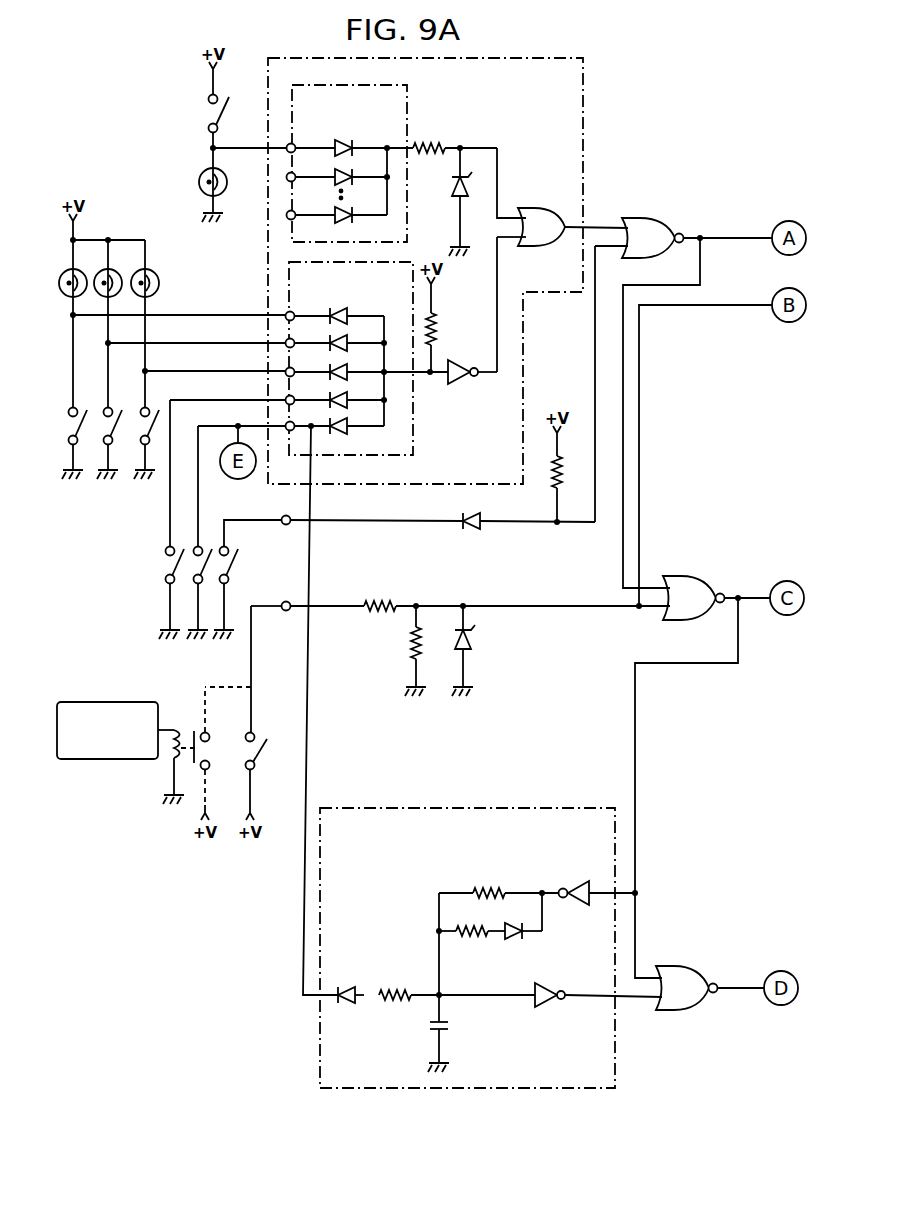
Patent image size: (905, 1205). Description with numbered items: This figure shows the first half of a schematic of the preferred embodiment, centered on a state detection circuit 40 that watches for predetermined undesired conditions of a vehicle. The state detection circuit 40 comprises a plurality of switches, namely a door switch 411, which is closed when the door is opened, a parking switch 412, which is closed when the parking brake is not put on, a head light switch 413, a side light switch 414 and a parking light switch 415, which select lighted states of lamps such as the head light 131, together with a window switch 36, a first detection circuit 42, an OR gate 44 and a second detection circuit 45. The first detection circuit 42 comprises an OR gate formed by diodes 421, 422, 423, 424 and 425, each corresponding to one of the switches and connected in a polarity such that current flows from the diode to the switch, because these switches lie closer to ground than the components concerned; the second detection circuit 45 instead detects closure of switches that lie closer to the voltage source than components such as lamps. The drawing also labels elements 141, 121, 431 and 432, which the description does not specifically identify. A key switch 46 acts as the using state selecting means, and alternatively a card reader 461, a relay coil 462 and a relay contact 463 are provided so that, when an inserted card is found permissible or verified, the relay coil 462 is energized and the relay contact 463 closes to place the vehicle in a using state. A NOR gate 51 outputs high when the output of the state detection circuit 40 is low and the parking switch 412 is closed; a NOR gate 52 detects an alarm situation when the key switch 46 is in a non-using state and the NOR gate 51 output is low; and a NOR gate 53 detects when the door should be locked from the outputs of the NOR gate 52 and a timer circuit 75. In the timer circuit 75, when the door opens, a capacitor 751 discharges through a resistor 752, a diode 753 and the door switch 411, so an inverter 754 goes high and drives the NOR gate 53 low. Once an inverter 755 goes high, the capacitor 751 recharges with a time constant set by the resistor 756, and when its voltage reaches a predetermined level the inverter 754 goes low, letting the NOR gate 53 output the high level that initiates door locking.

The state detection circuit 40 is at (584, 93).
The second detection circuit 45 is at (407, 132).
The first detection circuit 42 is at (379, 370).
The OR gate 44 is at (540, 206).
The NOR gate 51 is at (641, 217).
The NOR gate 52 is at (676, 577).
The NOR gate 53 is at (677, 968).
The resistor 431 is at (434, 321).
The inverter 432 is at (457, 386).
The diode 421 is at (344, 433).
The diode 422 is at (344, 406).
The diode 423 is at (344, 378).
The diode 424 is at (344, 349).
The diode 425 is at (344, 322).
The lamp 141 is at (90, 270).
The head light 131 is at (122, 272).
The lamp 121 is at (158, 289).
The parking light switch 415 is at (88, 434).
The side light switch 414 is at (119, 412).
The head light switch 413 is at (130, 437).
The window switch 36 is at (173, 566).
The door switch 411 is at (212, 545).
The parking switch 412 is at (232, 566).
The card reader 461 is at (91, 760).
The relay coil 462 is at (171, 752).
The relay contact 463 is at (192, 737).
The key switch 46 is at (266, 757).
The timer circuit 75 is at (490, 808).
The capacitor 751 is at (450, 1026).
The resistor 752 is at (394, 984).
The diode 753 is at (347, 984).
The inverter 754 is at (553, 989).
The inverter 755 is at (580, 879).
The resistor 756 is at (491, 887).